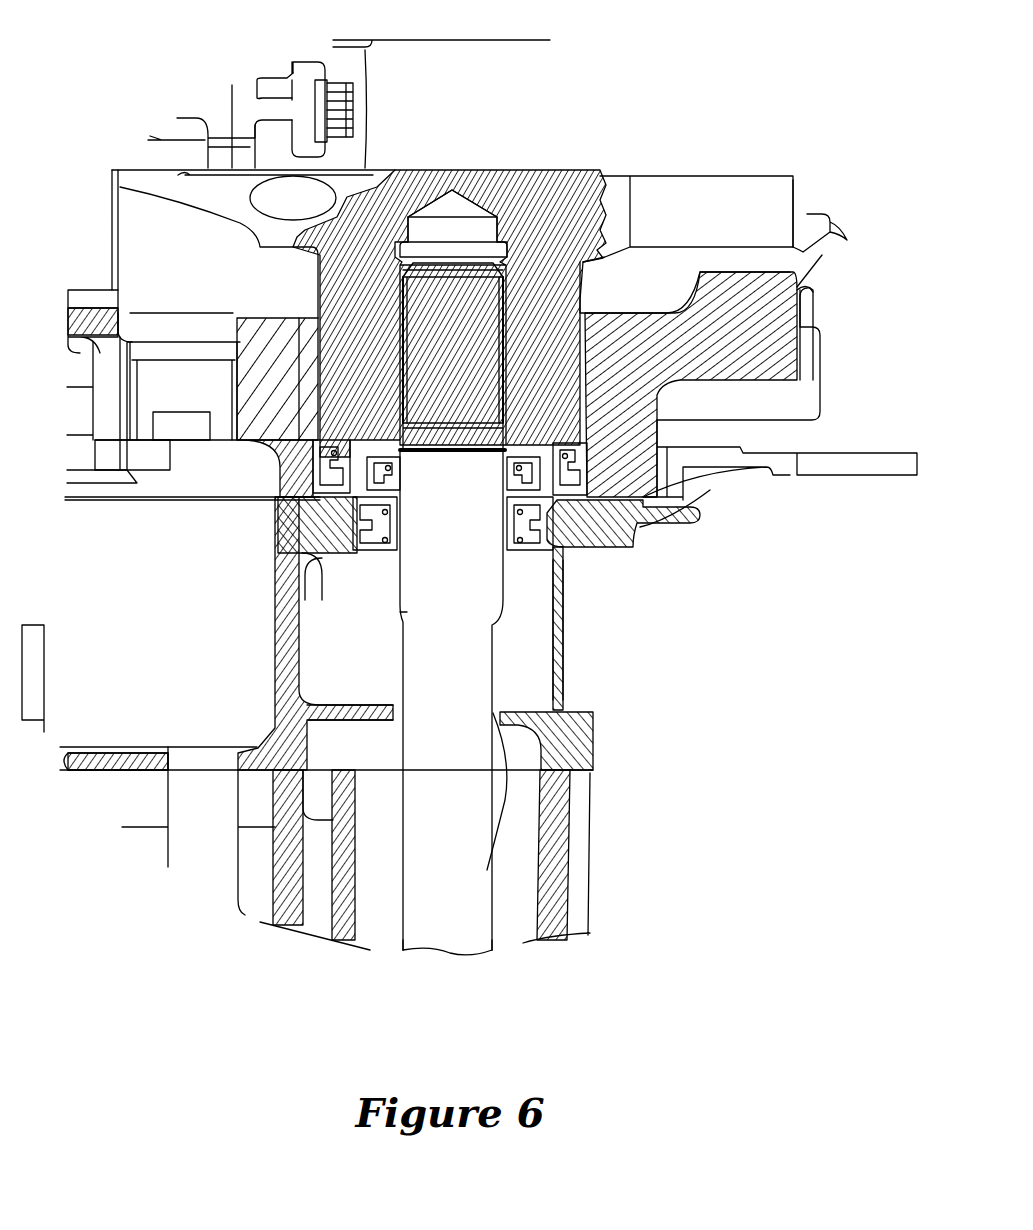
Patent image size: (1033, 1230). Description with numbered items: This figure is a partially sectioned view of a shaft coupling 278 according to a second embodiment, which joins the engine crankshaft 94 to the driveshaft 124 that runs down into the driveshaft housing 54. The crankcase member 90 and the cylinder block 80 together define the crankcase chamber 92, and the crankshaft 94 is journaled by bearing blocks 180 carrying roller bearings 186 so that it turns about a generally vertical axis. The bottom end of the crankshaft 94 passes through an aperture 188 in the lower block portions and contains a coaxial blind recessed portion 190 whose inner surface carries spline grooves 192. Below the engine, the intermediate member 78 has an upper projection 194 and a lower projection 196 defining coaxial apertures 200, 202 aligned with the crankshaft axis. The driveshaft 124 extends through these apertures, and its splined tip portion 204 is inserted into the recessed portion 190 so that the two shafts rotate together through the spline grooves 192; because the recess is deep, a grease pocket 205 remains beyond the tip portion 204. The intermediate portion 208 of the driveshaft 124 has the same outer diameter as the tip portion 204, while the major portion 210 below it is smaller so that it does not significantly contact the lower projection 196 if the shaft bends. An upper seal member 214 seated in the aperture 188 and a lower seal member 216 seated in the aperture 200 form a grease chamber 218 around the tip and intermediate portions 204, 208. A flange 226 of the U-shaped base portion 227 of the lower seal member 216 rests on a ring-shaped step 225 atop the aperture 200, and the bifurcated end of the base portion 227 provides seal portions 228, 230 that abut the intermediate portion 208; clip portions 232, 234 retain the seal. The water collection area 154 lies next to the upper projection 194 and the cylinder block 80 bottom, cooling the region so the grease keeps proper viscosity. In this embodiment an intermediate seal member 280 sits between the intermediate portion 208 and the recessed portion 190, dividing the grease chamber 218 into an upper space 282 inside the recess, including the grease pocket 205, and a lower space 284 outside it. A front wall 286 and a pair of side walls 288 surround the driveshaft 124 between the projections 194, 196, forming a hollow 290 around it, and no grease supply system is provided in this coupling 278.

The driveshaft housing 54 is at (555, 882).
The intermediate member 78 is at (288, 625).
The cylinder block 80 is at (240, 316).
The crankcase member 90 is at (775, 340).
The crankcase chamber 92 is at (680, 272).
The crankshaft 94 is at (565, 185).
The driveshaft 124 is at (457, 955).
The water collection area 154 is at (100, 630).
The bearing blocks 180 is at (269, 296).
The roller bearings 186 is at (600, 327).
The aperture 188 is at (298, 318).
The recessed portion 190 is at (478, 292).
The spline grooves 192 is at (425, 300).
The upper projection 194 is at (643, 527).
The lower projection 196 is at (590, 745).
The aperture 200 is at (527, 553).
The aperture 202 is at (497, 840).
The tip portion 204 is at (438, 341).
The grease pocket 205 is at (448, 228).
The intermediate portion 208 is at (477, 482).
The major portion 210 is at (433, 712).
The upper seal member 214 is at (300, 475).
The lower seal member 216 is at (503, 580).
The grease chamber 218 is at (683, 483).
The ring-shaped step 225 is at (600, 523).
The flange 226 is at (367, 575).
The base portion 227 is at (318, 563).
The seal portion 228 is at (400, 520).
The seal portion 230 is at (400, 567).
The clip portion 232 is at (400, 490).
The clip portion 234 is at (410, 600).
The shaft coupling 278 is at (771, 146).
The intermediate seal member 280 is at (660, 440).
The upper space 282 is at (265, 443).
The lower space 284 is at (288, 537).
The front wall 286 is at (565, 645).
The side walls 288 is at (540, 688).
The hollow 290 is at (337, 686).